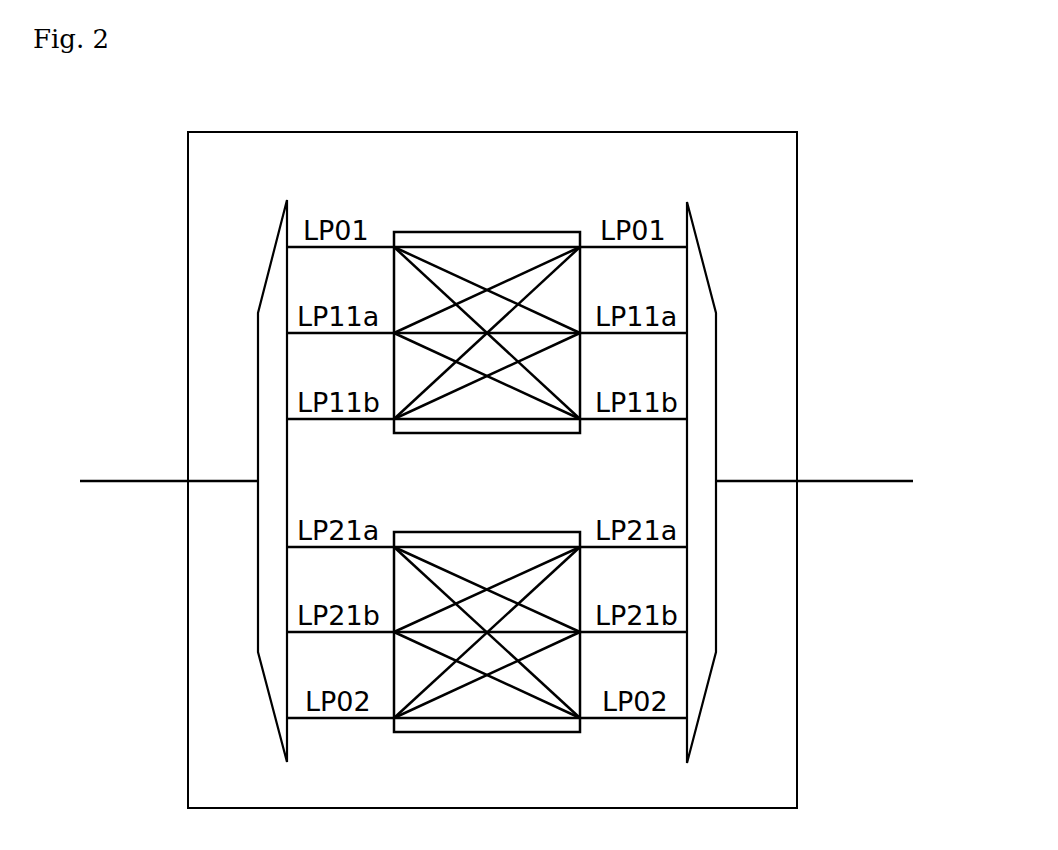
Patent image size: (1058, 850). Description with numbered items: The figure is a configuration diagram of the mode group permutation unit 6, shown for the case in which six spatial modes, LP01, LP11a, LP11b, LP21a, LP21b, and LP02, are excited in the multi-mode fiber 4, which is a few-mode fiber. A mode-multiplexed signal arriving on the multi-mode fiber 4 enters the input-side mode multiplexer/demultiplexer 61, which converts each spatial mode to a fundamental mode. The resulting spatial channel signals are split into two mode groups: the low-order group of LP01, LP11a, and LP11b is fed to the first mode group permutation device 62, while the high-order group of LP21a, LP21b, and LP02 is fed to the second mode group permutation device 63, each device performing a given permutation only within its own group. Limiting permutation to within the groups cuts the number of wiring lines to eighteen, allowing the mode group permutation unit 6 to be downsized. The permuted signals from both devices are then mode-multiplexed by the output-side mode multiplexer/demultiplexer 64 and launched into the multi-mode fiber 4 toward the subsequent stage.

The multi-mode fiber 4 is at (120, 481).
The mode group permutation unit 6 is at (730, 132).
The input-side mode multiplexer/demultiplexer 61 is at (270, 262).
The first mode group permutation device 62 is at (458, 232).
The second mode group permutation device 63 is at (458, 532).
The output-side mode multiplexer/demultiplexer 64 is at (707, 272).